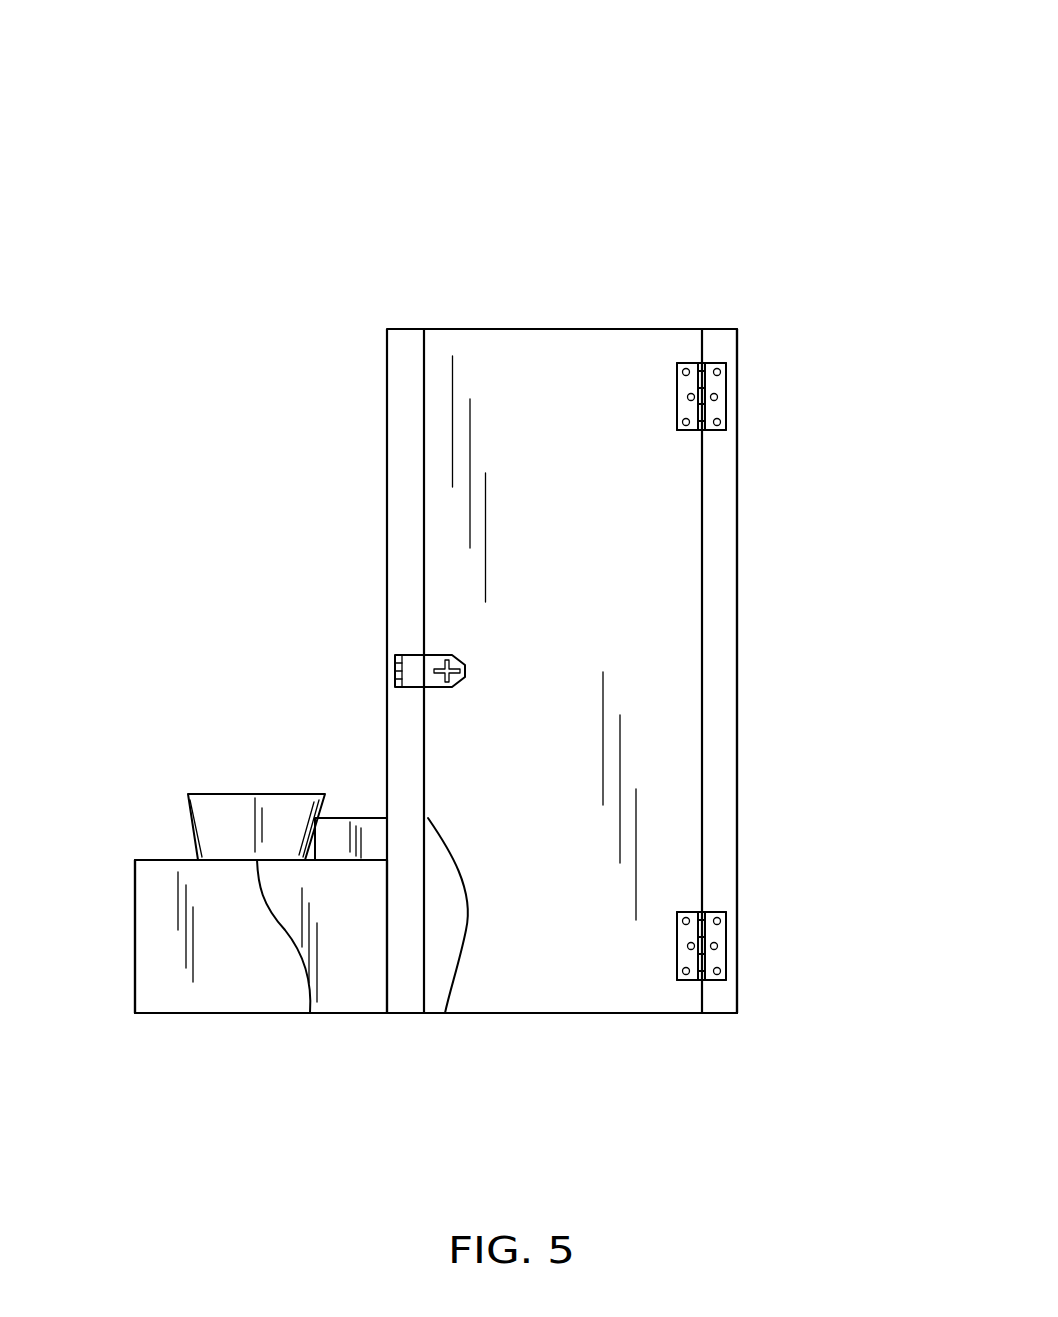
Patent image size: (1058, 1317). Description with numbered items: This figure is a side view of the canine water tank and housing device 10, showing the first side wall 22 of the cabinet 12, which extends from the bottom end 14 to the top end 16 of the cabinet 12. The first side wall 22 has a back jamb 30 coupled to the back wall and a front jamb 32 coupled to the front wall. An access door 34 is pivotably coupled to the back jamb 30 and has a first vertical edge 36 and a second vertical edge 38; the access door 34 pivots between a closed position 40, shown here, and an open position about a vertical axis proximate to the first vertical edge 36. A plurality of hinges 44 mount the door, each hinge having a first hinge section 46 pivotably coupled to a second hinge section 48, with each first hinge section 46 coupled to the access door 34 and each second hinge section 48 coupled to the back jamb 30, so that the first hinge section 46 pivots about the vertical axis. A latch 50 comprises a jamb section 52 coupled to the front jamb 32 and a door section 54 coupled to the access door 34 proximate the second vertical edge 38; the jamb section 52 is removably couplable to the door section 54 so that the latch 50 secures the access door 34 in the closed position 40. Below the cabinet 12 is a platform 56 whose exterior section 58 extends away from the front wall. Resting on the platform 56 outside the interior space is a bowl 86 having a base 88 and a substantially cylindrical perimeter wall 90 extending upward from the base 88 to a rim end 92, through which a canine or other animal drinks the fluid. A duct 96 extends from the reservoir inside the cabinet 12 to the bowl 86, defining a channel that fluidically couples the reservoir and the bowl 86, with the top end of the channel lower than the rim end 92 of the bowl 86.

The canine water tank and housing device 10 is at (690, 77).
The cabinet 12 is at (743, 250).
The bottom end 14 is at (697, 1073).
The top end 16 is at (452, 272).
The first side wall 22 is at (790, 567).
The back jamb 30 is at (718, 522).
The front jamb 32 is at (405, 403).
The access door 34 is at (640, 764).
The first vertical edge 36 is at (702, 620).
The second vertical edge 38 is at (445, 1013).
The closed position 40 is at (502, 1082).
The hinges 44 is at (785, 377).
The first hinge section 46 is at (690, 388).
The second hinge section 48 is at (715, 408).
The latch 50 is at (345, 675).
The jamb section 52 is at (400, 612).
The door section 54 is at (450, 662).
The platform 56 is at (250, 977).
The exterior section 58 is at (160, 940).
The bowl 86 is at (143, 784).
The base 88 is at (310, 1013).
The perimeter wall 90 is at (213, 820).
The rim end 92 is at (230, 793).
The duct 96 is at (360, 818).